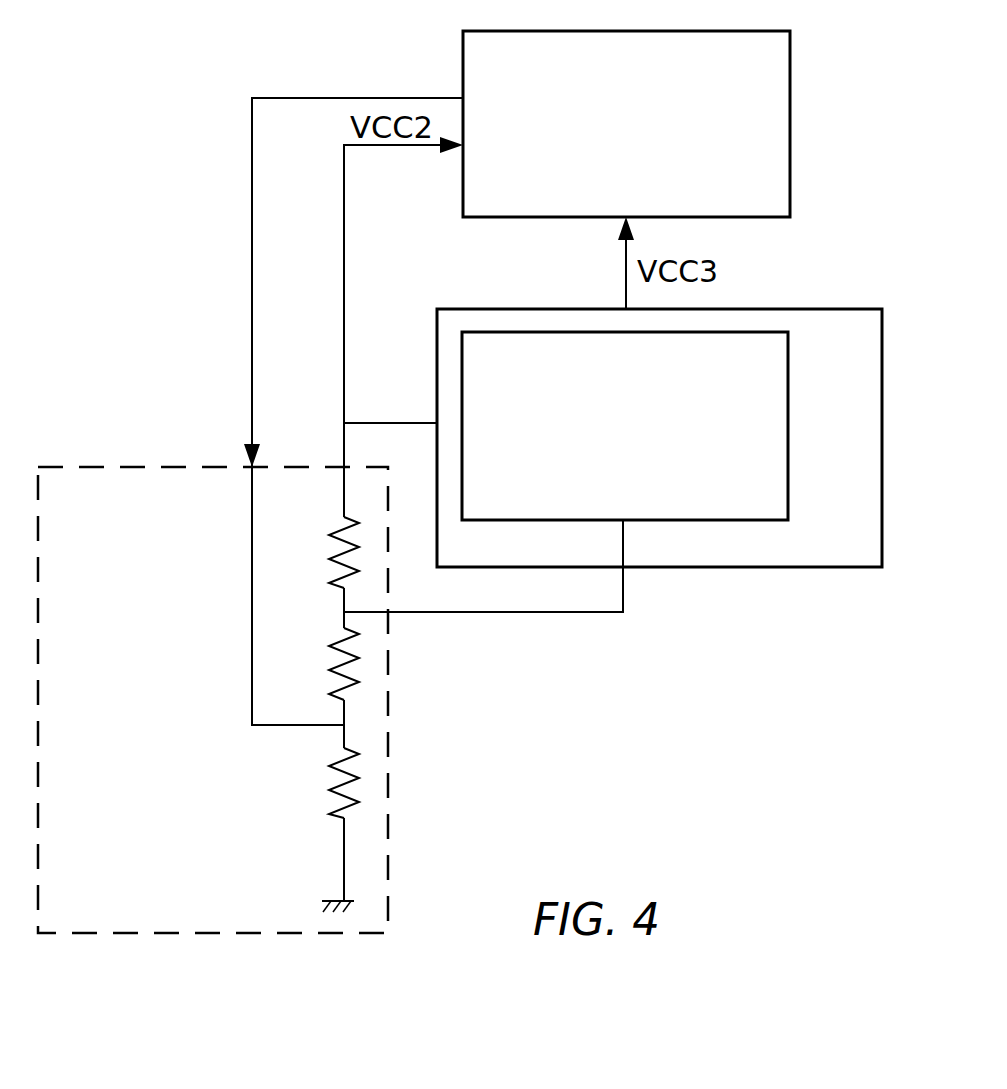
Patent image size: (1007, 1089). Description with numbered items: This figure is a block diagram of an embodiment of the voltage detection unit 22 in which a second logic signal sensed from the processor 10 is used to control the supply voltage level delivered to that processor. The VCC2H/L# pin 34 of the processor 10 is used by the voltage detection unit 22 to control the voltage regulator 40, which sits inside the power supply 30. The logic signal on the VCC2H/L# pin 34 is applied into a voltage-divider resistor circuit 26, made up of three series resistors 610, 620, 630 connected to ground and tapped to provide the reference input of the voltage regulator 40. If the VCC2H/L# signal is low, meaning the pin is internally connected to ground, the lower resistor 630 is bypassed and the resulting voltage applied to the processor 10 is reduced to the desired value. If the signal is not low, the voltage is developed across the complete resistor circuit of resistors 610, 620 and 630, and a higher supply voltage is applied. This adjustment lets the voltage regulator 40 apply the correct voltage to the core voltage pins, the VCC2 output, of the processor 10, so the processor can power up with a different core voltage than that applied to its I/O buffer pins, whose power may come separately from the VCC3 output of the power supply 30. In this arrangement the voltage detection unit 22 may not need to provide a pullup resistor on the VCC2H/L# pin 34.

The processor 10 is at (645, 161).
The voltage detection unit 22 is at (145, 581).
The voltage-divider resistor circuit 26 is at (205, 822).
The power supply 30 is at (875, 561).
The VCC2H/L# pin 34 is at (252, 167).
The voltage regulator 40 is at (712, 409).
The resistor 610 is at (318, 552).
The resistor 620 is at (317, 664).
The resistor 630 is at (317, 783).